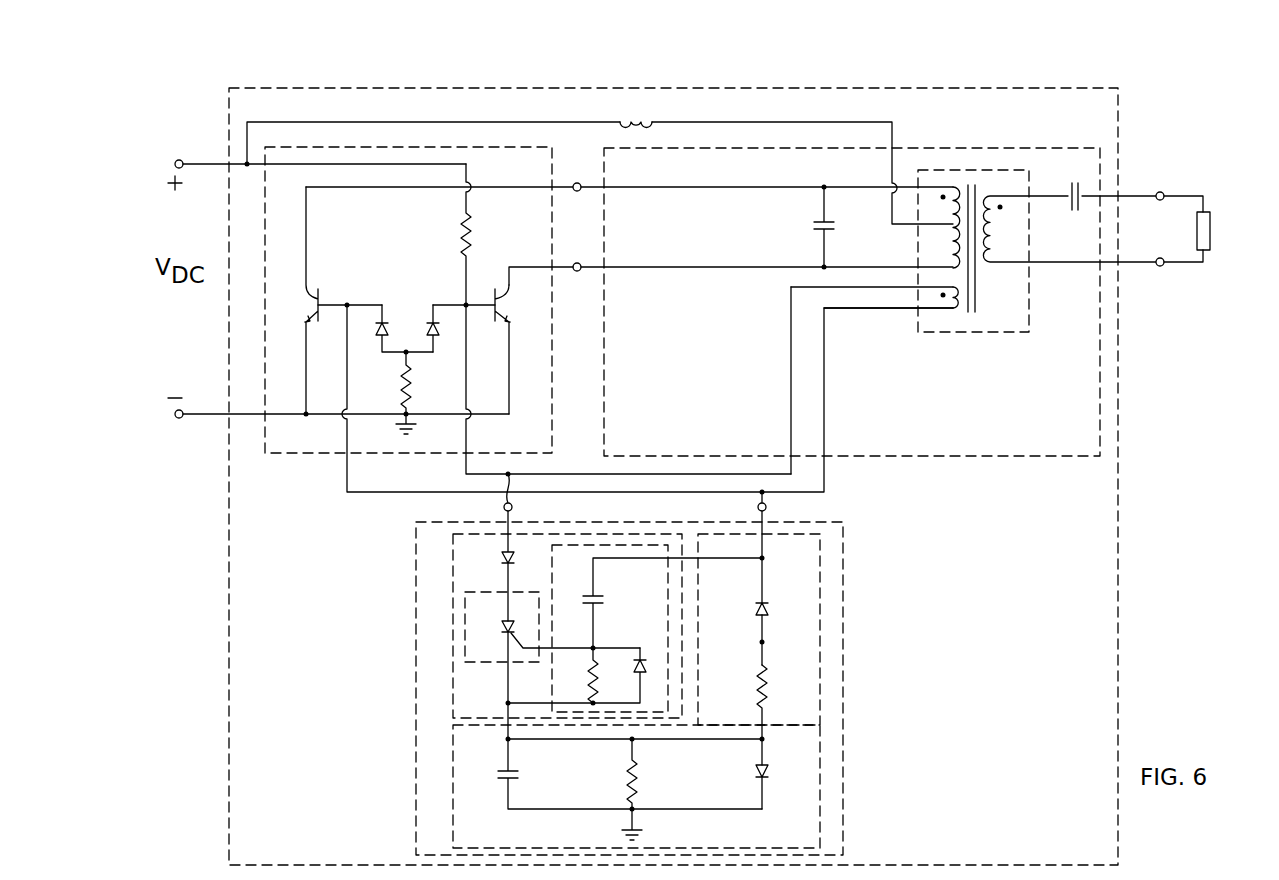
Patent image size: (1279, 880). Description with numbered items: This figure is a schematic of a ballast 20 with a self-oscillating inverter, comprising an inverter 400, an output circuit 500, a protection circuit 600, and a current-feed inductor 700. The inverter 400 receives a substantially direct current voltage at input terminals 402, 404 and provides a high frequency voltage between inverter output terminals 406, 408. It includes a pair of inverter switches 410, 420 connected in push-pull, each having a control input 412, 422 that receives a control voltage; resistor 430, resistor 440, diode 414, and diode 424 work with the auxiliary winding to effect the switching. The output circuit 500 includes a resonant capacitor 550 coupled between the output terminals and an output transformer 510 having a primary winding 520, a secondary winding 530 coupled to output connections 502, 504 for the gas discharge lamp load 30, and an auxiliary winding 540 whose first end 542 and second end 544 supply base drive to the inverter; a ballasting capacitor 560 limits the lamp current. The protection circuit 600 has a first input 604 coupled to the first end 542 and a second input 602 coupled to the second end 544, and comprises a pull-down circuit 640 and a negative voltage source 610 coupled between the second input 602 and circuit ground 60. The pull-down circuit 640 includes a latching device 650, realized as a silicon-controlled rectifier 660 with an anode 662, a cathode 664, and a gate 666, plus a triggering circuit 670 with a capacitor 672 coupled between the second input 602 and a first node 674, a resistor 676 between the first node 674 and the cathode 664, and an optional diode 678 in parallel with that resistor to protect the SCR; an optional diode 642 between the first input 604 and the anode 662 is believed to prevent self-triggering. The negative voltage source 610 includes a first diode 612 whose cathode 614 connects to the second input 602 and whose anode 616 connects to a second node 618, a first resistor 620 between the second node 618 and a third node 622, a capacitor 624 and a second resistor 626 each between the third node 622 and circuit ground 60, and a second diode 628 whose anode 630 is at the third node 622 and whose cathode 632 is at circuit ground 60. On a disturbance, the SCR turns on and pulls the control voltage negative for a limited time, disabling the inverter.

The ballast 20 is at (1062, 848).
The gas discharge lamp load 30 is at (1210, 232).
The circuit ground 60 is at (413, 421).
The inverter 400 is at (409, 221).
The input terminal 402 is at (177, 160).
The input terminal 404 is at (177, 418).
The inverter output terminal 406 is at (581, 186).
The inverter output terminal 408 is at (581, 266).
The inverter switch 410 is at (510, 322).
The control input 412 is at (493, 304).
The diode 414 is at (440, 329).
The inverter switch 420 is at (297, 304).
The control input 422 is at (352, 293).
The diode 424 is at (372, 333).
The resistor 430 is at (441, 369).
The resistor 440 is at (471, 237).
The output circuit 500 is at (709, 343).
The output connection 502 is at (1160, 192).
The output connection 504 is at (1160, 267).
The output transformer 510 is at (992, 325).
The primary winding 520 is at (953, 237).
The secondary winding 530 is at (993, 238).
The auxiliary winding 540 is at (953, 300).
The first end 542 is at (902, 287).
The second end 544 is at (900, 312).
The resonant capacitor 550 is at (818, 212).
The ballasting capacitor 560 is at (1062, 190).
The protection circuit 600 is at (845, 678).
The second input 602 is at (766, 507).
The first input 604 is at (504, 507).
The negative voltage source 610 is at (816, 563).
The first diode 612 is at (766, 605).
The cathode 614 is at (762, 580).
The anode 616 is at (760, 628).
The second node 618 is at (765, 642).
The first resistor 620 is at (767, 673).
The third node 622 is at (763, 738).
The capacitor 624 is at (512, 778).
The second resistor 626 is at (628, 778).
The second diode 628 is at (767, 770).
The anode 630 is at (757, 752).
The cathode 632 is at (757, 787).
The pull-down circuit 640 is at (533, 538).
The diode 642 is at (500, 557).
The latching device 650 is at (500, 660).
The silicon-controlled rectifier 660 is at (494, 667).
The anode 662 is at (503, 606).
The cathode 664 is at (503, 652).
The gate 666 is at (525, 650).
The triggering circuit 670 is at (654, 591).
The capacitor 672 is at (587, 595).
The first node 674 is at (593, 652).
The resistor 676 is at (593, 668).
The diode 678 is at (637, 668).
The current-feed inductor 700 is at (633, 119).